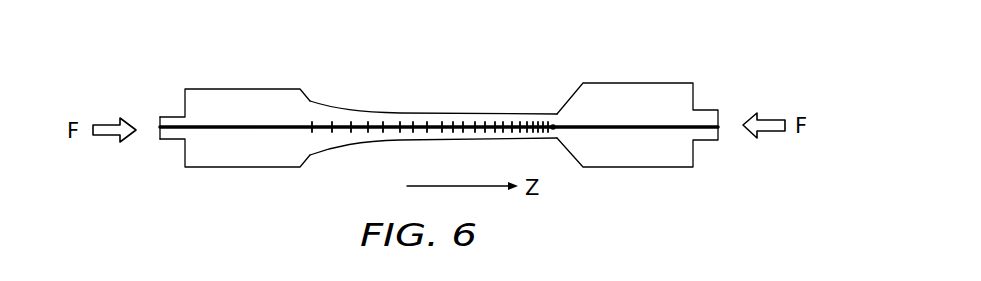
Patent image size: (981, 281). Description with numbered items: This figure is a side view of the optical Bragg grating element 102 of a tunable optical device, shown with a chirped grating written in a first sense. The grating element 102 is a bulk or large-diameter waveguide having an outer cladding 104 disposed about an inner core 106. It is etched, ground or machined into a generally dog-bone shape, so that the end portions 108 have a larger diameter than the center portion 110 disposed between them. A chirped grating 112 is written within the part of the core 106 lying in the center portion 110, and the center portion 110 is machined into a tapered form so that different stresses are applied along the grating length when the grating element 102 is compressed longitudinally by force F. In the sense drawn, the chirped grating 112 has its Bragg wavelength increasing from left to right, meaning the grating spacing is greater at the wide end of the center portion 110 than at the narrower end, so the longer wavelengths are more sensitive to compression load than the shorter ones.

The optical Bragg grating element 102 is at (439, 100).
The outer cladding 104 is at (258, 97).
The inner core 106 is at (220, 130).
The end portions 108 is at (439, 115).
The center portion 110 is at (430, 112).
The chirped grating 112 is at (368, 128).